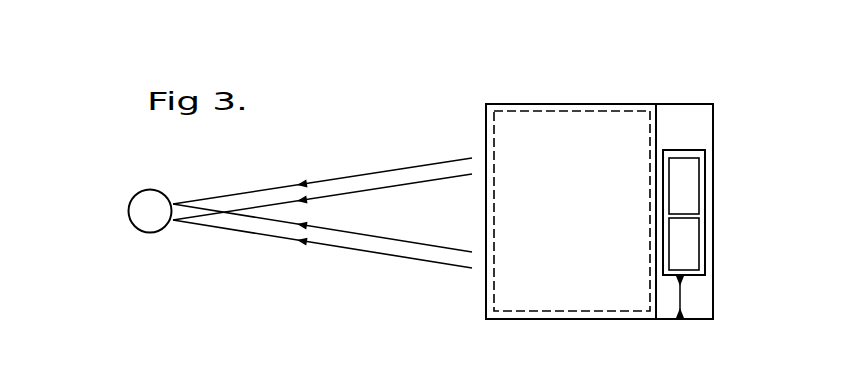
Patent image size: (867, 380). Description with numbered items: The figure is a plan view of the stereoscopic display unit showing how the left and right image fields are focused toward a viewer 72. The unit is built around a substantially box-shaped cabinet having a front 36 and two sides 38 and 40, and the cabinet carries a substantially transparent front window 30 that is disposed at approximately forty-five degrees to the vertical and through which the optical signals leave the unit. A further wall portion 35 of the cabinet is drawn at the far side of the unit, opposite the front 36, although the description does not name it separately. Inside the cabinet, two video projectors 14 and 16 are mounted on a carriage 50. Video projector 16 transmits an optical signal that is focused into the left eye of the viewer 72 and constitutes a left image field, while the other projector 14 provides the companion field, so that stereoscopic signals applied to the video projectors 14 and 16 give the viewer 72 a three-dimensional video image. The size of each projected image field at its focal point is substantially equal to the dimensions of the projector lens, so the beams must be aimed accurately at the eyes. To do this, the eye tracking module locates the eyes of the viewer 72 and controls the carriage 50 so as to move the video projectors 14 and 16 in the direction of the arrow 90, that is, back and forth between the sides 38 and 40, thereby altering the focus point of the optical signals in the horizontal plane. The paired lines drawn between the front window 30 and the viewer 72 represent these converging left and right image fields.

The side 40 is at (591, 104).
The front 36 is at (485, 128).
The side 38 is at (575, 320).
The right side wall 35 is at (714, 277).
The front window 30 is at (568, 238).
The carriage 50 is at (706, 232).
The video projector 16 is at (674, 203).
The video projector 14 is at (674, 258).
The arrow 90 is at (683, 296).
The viewer 72 is at (128, 211).